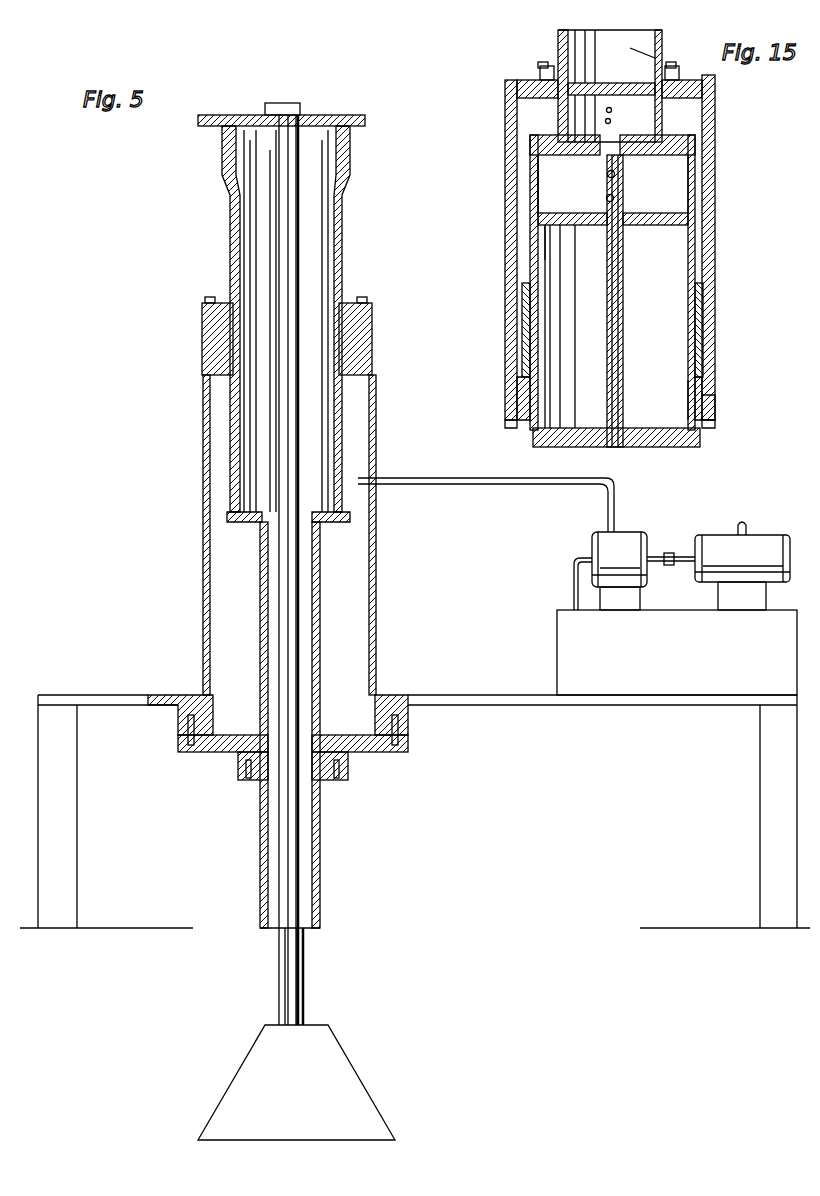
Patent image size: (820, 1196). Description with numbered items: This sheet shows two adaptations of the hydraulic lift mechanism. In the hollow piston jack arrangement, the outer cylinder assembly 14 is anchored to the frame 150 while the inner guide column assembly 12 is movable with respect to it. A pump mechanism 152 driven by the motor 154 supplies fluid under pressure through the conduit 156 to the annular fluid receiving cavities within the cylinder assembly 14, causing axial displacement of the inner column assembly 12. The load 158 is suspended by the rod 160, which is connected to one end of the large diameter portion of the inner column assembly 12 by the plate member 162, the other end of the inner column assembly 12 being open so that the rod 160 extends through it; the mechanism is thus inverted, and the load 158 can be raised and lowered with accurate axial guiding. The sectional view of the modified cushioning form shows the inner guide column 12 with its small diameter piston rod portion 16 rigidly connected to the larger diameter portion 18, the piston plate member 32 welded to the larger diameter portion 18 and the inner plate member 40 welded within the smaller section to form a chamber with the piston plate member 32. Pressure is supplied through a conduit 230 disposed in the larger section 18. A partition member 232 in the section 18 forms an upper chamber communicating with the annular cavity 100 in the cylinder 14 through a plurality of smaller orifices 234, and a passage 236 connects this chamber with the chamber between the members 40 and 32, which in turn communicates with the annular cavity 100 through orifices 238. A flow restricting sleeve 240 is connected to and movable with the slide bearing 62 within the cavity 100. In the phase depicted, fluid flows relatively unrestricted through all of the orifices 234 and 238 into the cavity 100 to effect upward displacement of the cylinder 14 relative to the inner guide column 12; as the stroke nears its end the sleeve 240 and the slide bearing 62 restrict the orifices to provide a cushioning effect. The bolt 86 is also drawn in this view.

In FIG. 5, the inner guide column assembly 12 is at (343, 564).
In FIG. 15, the inner guide column assembly 12 is at (677, 56).
In FIG. 5, the outer cylinder assembly 14 is at (389, 610).
In FIG. 15, the outer cylinder assembly 14 is at (733, 167).
In FIG. 15, the small diameter piston rod portion 16 is at (644, 58).
In FIG. 15, the larger diameter portion 18 is at (680, 403).
In FIG. 15, the piston plate member 32 is at (577, 165).
In FIG. 15, the inner plate member 40 is at (586, 90).
In FIG. 15, the slide bearing 62 is at (715, 400).
In FIG. 15, the bolt 86 is at (542, 84).
In FIG. 15, the annular cavity 100 is at (697, 130).
In FIG. 5, the frame 150 is at (420, 696).
In FIG. 5, the pump mechanism 152 is at (634, 550).
In FIG. 5, the motor 154 is at (720, 540).
In FIG. 5, the conduit 156 is at (512, 486).
In FIG. 5, the load 158 is at (349, 1082).
In FIG. 5, the rod 160 is at (297, 852).
In FIG. 5, the plate member 162 is at (352, 126).
In FIG. 15, the conduit 230 is at (607, 364).
In FIG. 15, the partition member 232 is at (578, 228).
In FIG. 15, the orifices 234 is at (530, 180).
In FIG. 15, the passage 236 is at (615, 176).
In FIG. 15, the orifices 238 is at (655, 115).
In FIG. 15, the flow restricting sleeve 240 is at (525, 325).